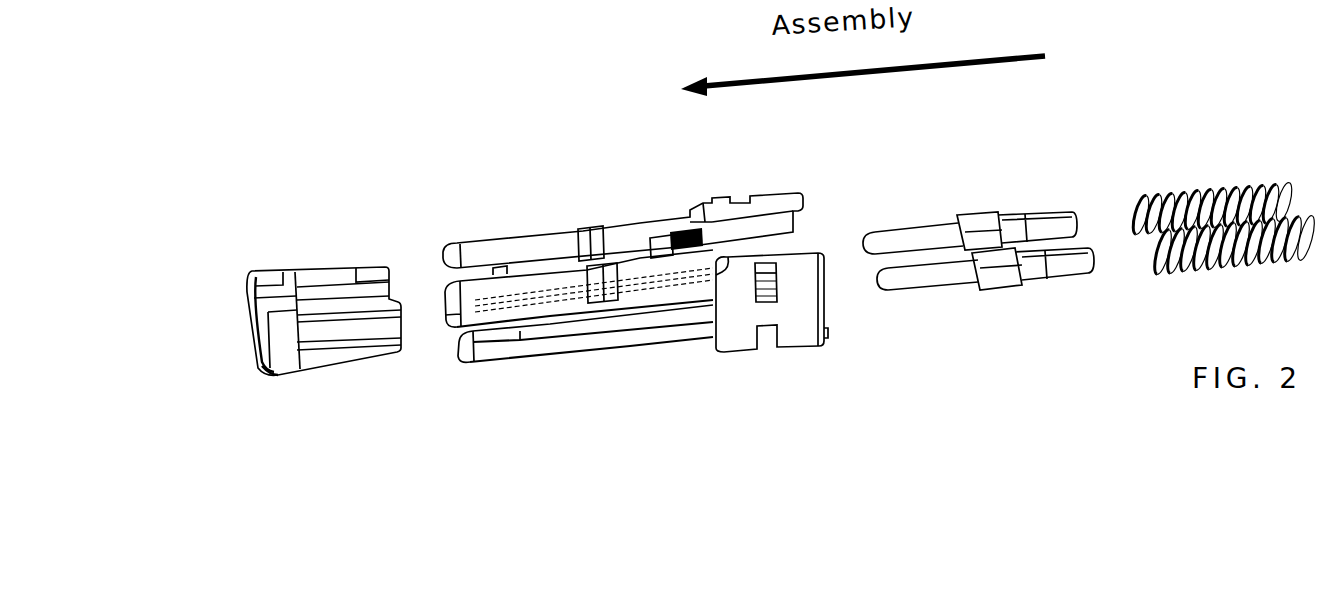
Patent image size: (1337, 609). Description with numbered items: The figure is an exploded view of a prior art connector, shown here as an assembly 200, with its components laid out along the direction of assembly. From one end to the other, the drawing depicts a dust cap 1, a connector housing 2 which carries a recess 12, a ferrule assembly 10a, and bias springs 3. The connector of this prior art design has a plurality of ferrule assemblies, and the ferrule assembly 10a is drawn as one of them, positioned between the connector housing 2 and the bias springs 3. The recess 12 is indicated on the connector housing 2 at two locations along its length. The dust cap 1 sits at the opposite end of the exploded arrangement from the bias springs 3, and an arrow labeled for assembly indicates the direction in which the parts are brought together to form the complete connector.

The connector assembly 200 is at (177, 218).
The dust cap 1 is at (330, 245).
The connector housing 2 is at (611, 210).
The recess 12 is at (577, 230).
The ferrule assembly 10a is at (952, 196).
The bias springs 3 is at (1190, 167).